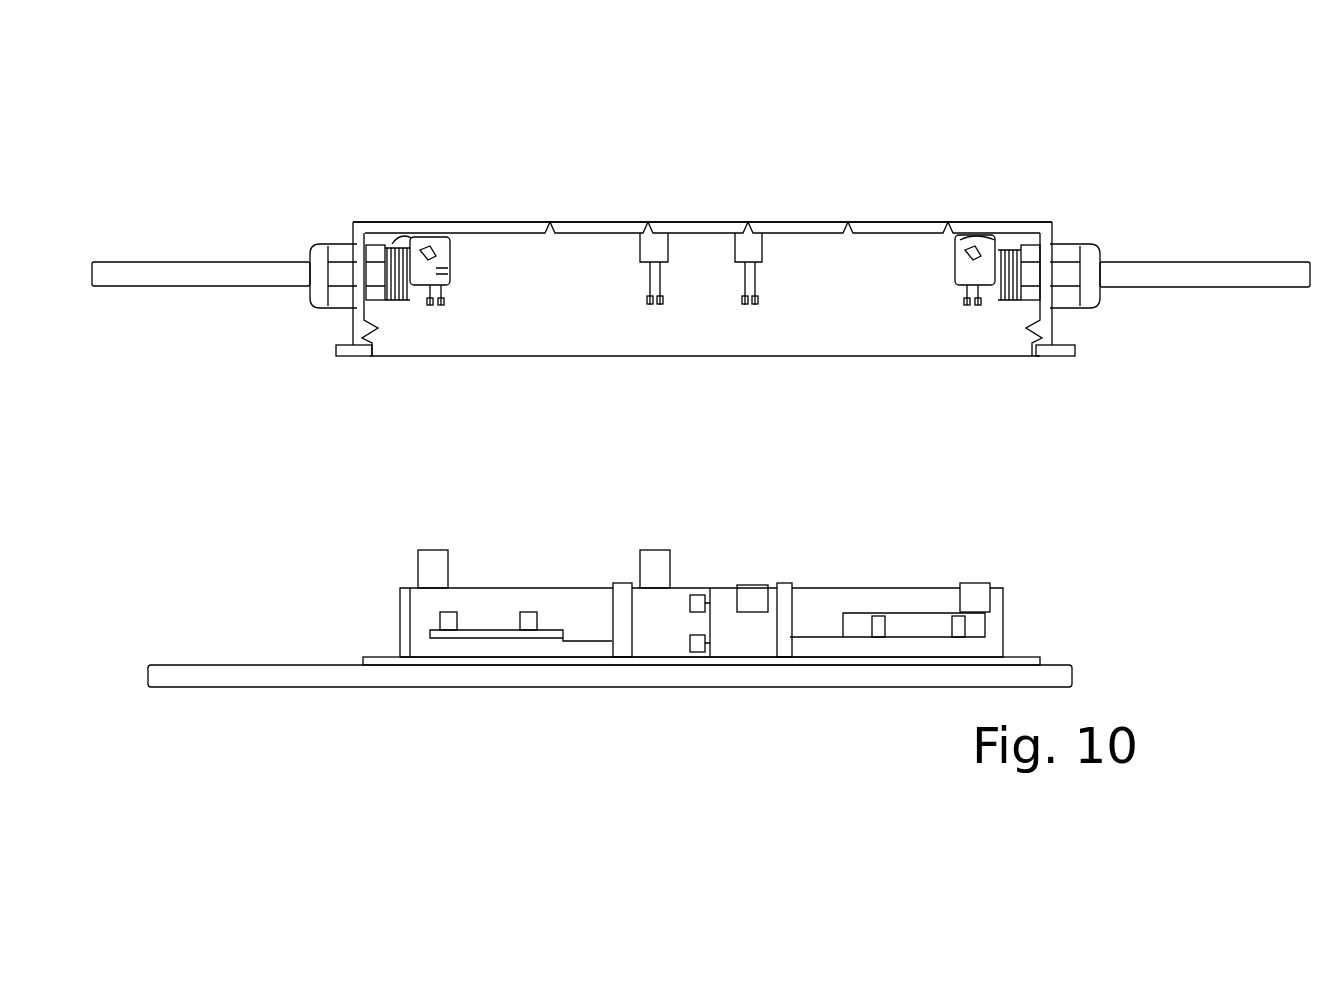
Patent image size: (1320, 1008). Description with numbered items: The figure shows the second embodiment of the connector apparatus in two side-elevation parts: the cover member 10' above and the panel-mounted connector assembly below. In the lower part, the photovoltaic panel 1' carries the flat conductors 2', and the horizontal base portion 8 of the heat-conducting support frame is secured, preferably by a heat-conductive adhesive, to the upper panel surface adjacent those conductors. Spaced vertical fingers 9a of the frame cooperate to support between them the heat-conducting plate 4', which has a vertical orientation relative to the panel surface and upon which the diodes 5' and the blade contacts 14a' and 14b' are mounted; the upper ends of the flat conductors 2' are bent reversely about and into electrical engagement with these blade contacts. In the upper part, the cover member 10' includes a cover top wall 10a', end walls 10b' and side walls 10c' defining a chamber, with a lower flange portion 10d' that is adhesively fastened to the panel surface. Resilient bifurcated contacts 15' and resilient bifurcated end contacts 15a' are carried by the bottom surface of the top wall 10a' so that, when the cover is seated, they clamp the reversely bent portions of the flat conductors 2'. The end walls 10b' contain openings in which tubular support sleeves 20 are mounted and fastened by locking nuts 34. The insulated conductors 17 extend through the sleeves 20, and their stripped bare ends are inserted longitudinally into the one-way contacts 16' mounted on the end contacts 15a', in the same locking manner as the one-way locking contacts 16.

The photovoltaic panel 1' is at (675, 669).
The flat conductors 2' is at (740, 550).
The heat-conducting plate 4' is at (701, 578).
The diodes 5' is at (661, 699).
The horizontal base portion 8 is at (1040, 658).
The vertical fingers 9a is at (617, 638).
The cover member 10' is at (702, 166).
The cover top wall 10a' is at (702, 185).
The end walls 10b' is at (645, 300).
The side walls 10c' is at (705, 369).
The lower flange portion 10d' is at (685, 418).
The blade contact 14a' is at (730, 567).
The blade contact 14b' is at (659, 683).
The resilient bifurcated contacts 15' is at (737, 326).
The resilient bifurcated end contacts 15a' is at (727, 336).
The one-way locking contacts 16 is at (919, 232).
The one-way contacts 16' is at (439, 211).
The insulated conductors 17 is at (193, 258).
The tubular support sleeves 20 is at (380, 245).
The locking nuts 34 is at (340, 252).